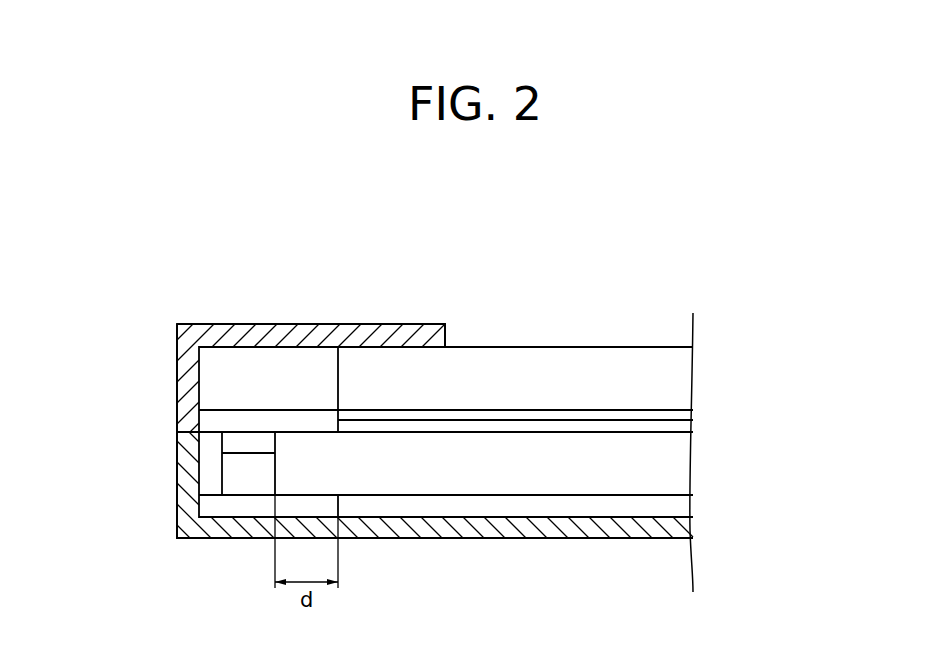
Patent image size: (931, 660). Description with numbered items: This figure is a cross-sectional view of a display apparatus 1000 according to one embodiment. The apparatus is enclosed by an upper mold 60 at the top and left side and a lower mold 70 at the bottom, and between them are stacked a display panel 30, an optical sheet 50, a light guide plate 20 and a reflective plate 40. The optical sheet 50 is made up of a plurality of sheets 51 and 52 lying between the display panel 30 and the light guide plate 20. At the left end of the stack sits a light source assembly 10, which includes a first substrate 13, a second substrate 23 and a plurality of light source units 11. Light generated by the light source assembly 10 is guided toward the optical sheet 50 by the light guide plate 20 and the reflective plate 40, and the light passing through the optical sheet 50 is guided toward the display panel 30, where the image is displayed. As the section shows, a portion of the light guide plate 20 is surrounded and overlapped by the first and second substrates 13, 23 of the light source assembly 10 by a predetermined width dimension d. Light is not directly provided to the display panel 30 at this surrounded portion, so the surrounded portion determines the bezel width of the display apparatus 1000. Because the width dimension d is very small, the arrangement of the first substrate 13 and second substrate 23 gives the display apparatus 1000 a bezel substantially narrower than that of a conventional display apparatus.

The display apparatus 1000 is at (332, 269).
The light source assembly 10 is at (117, 408).
The light source unit 11 is at (232, 470).
The first substrate 13 is at (203, 511).
The second substrate 23 is at (213, 418).
The light guide plate 20 is at (683, 470).
The display panel 30 is at (683, 376).
The reflective plate 40 is at (683, 497).
The optical sheet 50 is at (770, 405).
The sheet 51 is at (683, 410).
The sheet 52 is at (683, 421).
The upper mold 60 is at (188, 367).
The lower mold 70 is at (683, 526).